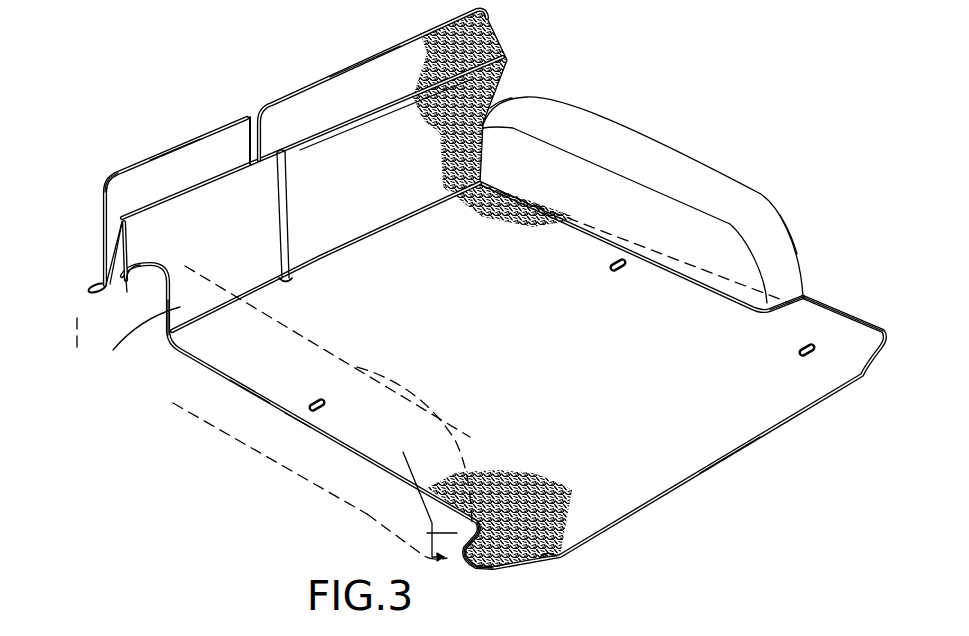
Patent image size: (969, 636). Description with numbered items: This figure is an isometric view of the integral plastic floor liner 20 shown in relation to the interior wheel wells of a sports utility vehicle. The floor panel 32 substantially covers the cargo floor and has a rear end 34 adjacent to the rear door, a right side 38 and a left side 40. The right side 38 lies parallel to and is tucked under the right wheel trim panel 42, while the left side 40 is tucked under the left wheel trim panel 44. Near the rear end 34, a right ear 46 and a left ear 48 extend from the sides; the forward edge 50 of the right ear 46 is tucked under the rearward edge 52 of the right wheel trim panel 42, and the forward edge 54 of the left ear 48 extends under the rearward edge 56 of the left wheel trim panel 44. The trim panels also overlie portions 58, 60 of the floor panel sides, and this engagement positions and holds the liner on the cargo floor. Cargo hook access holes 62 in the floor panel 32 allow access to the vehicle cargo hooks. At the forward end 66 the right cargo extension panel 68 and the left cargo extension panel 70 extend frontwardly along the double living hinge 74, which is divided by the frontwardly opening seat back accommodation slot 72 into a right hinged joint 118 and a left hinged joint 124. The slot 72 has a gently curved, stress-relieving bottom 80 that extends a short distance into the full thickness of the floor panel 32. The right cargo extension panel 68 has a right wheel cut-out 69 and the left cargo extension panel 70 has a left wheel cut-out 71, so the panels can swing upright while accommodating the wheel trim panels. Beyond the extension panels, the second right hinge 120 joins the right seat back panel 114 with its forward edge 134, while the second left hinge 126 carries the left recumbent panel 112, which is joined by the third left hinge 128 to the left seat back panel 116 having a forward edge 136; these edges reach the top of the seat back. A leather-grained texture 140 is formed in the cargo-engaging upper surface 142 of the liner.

The floor liner 20 is at (299, 432).
The floor panel 32 is at (517, 348).
The rear end 34 is at (744, 453).
The right side 38 is at (670, 268).
The left side 40 is at (348, 447).
The right wheel trim panel 42 is at (574, 196).
The left wheel trim panel 44 is at (358, 366).
The right ear 46 is at (832, 327).
The left ear 48 is at (498, 568).
The forward edge of right ear 50 is at (805, 296).
The rearward edge of right wheel trim panel 52 is at (797, 254).
The forward edge of left ear 54 is at (470, 527).
The rearward edge of left wheel trim panel 56 is at (402, 506).
The portion of right floor panel side 58 is at (620, 244).
The portion of left floor panel side 60 is at (253, 392).
The cargo hook access holes 62 is at (323, 404).
The forward end 66 is at (365, 246).
The right cargo extension panel 68 is at (349, 171).
The right wheel cut-out 69 is at (505, 104).
The left cargo extension panel 70 is at (200, 233).
The left wheel cut-out 71 is at (123, 292).
The seat back accommodation slot 72 is at (279, 190).
The double living hinge 74 is at (201, 182).
The slot bottom 80 is at (293, 280).
The left recumbent panel 112 is at (107, 303).
The right seat back panel 114 is at (306, 111).
The left seat back panel 116 is at (146, 183).
The right hinged joint 118 is at (420, 218).
The second right hinge 120 is at (503, 50).
The left hinged joint 124 is at (163, 335).
The second left hinge 126 is at (107, 207).
The third left hinge 128 is at (90, 288).
The right seat back panel forward edge 134 is at (362, 60).
The left seat back panel forward edge 136 is at (194, 140).
The leather-grained texture 140 is at (607, 527).
The cargo-engaging upper surface 142 is at (556, 550).